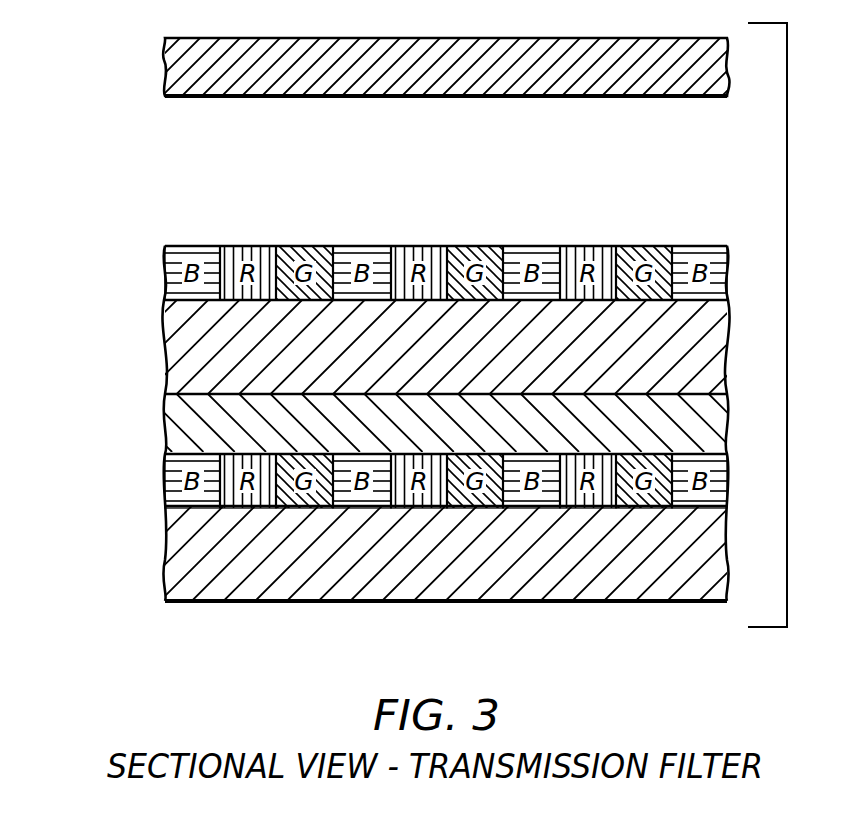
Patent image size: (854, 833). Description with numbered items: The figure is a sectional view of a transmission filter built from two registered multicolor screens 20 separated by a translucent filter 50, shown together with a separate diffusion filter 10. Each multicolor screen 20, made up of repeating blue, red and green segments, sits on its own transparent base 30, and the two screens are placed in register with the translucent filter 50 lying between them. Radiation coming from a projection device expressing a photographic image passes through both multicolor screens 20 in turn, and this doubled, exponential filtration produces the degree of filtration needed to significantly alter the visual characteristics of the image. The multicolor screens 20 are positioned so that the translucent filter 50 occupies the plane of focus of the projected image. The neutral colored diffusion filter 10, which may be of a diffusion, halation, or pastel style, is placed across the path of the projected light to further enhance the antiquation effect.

The diffusion filter 10 is at (160, 58).
The multicolor screen 20 is at (163, 258).
The transparent base 30 is at (167, 333).
The translucent filter 50 is at (163, 408).